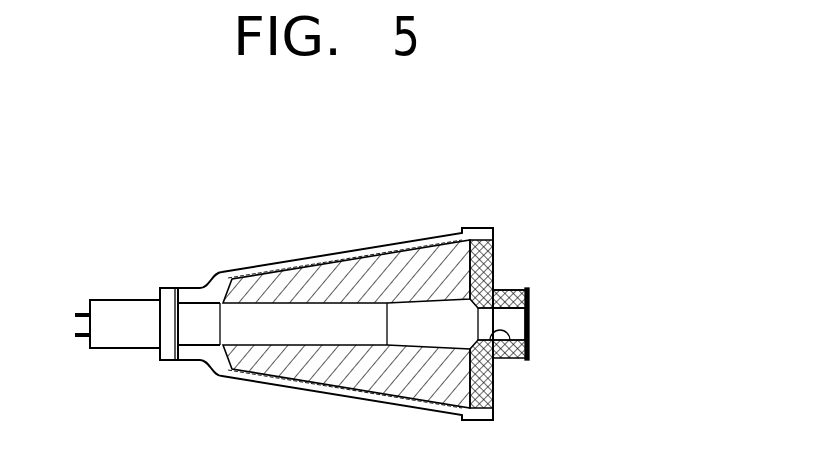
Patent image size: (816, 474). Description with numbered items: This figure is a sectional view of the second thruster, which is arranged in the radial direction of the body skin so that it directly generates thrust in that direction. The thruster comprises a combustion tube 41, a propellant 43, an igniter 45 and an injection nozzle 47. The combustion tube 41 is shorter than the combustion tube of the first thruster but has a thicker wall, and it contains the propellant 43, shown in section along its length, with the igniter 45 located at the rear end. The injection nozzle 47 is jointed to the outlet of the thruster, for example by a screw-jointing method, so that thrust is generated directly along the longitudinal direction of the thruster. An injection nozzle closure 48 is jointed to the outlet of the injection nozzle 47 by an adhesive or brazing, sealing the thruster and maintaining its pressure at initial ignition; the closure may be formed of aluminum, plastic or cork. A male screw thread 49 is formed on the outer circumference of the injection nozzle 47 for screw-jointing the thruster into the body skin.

The combustion tube 41 is at (345, 271).
The propellant 43 is at (306, 257).
The igniter 45 is at (147, 371).
The injection nozzle 47 is at (530, 357).
The injection nozzle closure 48 is at (529, 321).
The male screw thread 49 is at (509, 290).